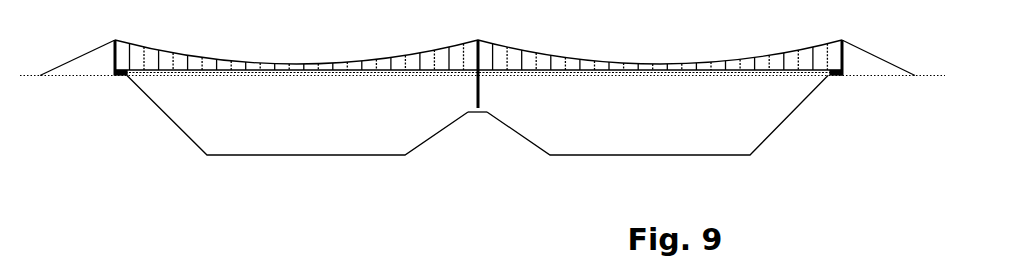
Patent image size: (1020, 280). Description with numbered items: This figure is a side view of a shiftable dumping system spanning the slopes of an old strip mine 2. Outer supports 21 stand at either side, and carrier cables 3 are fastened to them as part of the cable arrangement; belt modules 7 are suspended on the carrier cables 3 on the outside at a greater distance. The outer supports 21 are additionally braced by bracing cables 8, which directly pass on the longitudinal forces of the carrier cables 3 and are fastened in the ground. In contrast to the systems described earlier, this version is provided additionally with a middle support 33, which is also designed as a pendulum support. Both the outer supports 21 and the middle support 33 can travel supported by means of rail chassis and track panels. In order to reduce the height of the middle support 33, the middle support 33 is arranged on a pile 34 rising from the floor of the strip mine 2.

The old strip mine 2 is at (318, 125).
The carrier cables 3 is at (148, 48).
The belt modules 7 is at (153, 71).
The bracing cables 8 is at (80, 57).
The outer supports 21 is at (113, 43).
The middle support 33 is at (480, 57).
The pile 34 is at (479, 117).